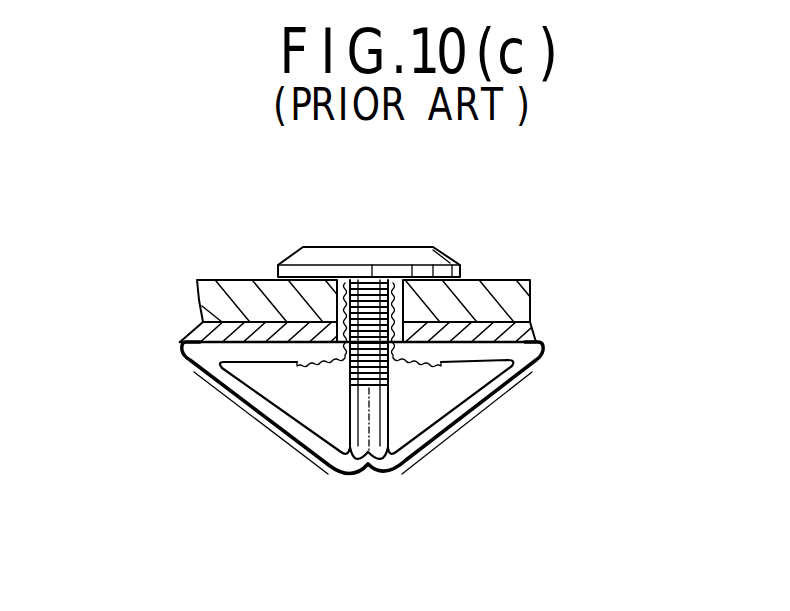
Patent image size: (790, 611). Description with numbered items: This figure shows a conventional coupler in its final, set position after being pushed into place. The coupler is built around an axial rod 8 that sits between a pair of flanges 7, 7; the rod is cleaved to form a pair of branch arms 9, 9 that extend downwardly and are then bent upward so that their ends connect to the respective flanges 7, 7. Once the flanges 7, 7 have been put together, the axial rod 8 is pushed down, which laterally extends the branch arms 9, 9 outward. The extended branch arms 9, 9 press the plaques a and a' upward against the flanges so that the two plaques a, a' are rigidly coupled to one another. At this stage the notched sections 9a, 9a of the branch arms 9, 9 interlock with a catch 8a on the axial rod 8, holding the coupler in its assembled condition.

The flange 7 is at (340, 247).
The axial rod 8 is at (360, 398).
The catch 8a is at (383, 283).
The branch arm 9 is at (188, 350).
The notched section 9a is at (323, 366).
The plaque a is at (381, 272).
The plaque a' is at (396, 316).